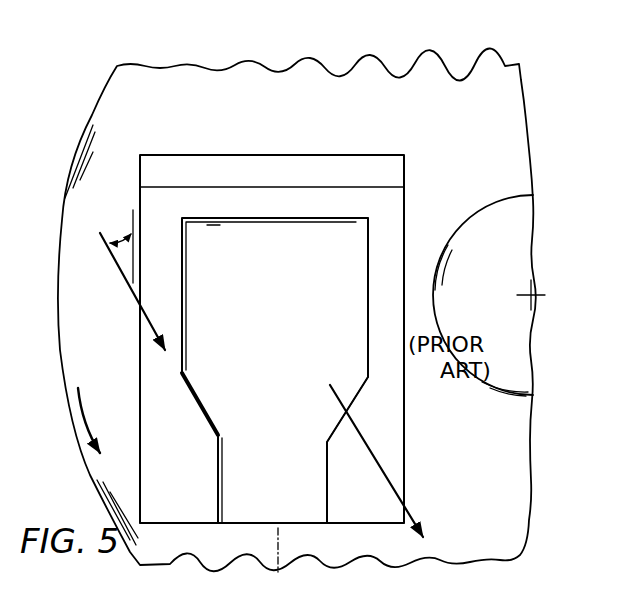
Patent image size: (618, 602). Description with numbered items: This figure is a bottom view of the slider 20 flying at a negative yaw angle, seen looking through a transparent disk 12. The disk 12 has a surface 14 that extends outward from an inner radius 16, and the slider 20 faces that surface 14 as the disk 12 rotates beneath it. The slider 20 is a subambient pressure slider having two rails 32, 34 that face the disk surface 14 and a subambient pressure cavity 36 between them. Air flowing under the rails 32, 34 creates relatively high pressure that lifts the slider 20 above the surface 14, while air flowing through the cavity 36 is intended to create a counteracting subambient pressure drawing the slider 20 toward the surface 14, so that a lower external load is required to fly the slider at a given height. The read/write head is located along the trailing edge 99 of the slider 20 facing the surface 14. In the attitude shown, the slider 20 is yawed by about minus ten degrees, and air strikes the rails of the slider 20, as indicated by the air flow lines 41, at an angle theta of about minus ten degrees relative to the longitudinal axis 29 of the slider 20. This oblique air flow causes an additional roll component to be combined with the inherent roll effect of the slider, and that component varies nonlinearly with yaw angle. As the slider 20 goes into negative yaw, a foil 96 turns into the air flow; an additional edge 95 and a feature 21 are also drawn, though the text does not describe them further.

The disk 12 is at (88, 468).
The disk surface 14 is at (94, 333).
The inner radius 16 is at (526, 290).
The slider 20 is at (250, 157).
The upper band 21 is at (279, 164).
The longitudinal axis 29 is at (282, 562).
The rail 32 is at (139, 326).
The rail 34 is at (368, 290).
The subambient pressure cavity 36 is at (286, 295).
The air flow lines 41 is at (368, 450).
The left inclined edge 95 is at (204, 412).
The foil 96 is at (338, 423).
The trailing edge 99 is at (170, 524).